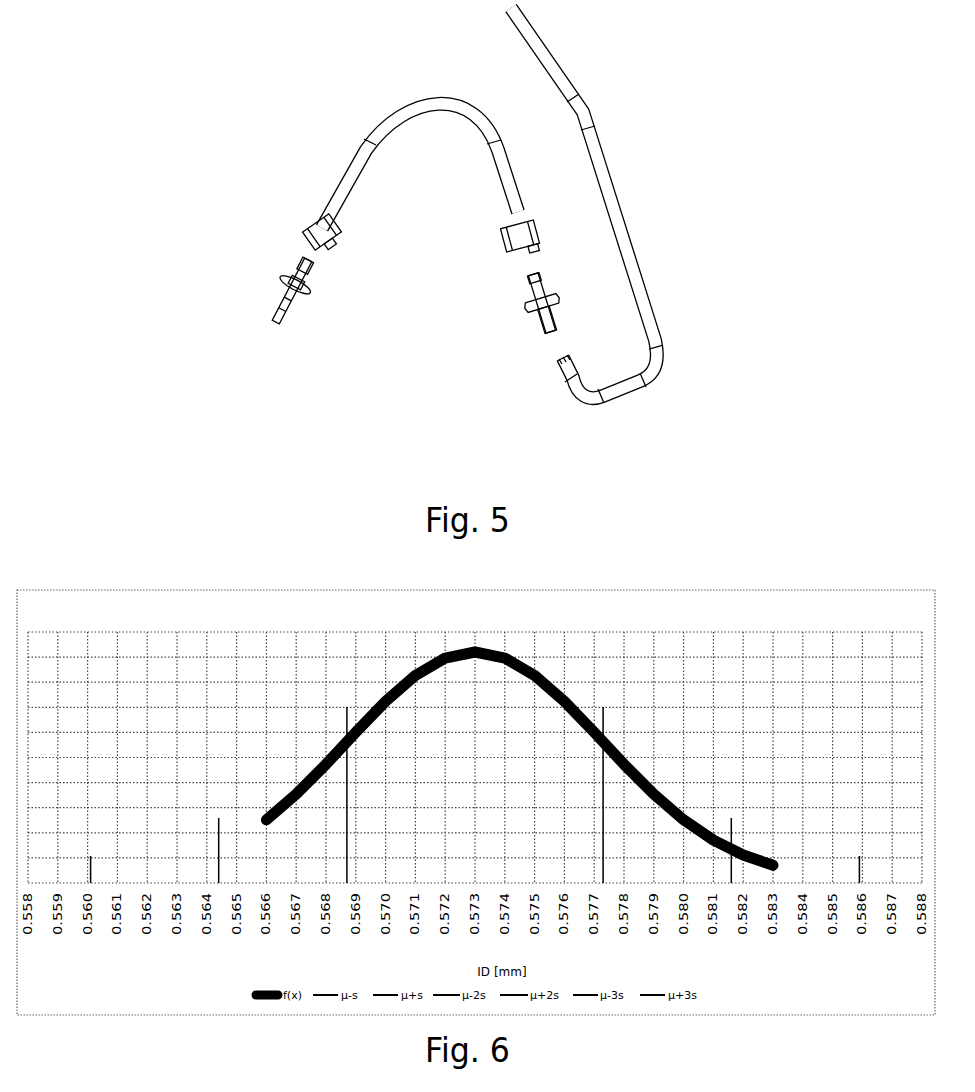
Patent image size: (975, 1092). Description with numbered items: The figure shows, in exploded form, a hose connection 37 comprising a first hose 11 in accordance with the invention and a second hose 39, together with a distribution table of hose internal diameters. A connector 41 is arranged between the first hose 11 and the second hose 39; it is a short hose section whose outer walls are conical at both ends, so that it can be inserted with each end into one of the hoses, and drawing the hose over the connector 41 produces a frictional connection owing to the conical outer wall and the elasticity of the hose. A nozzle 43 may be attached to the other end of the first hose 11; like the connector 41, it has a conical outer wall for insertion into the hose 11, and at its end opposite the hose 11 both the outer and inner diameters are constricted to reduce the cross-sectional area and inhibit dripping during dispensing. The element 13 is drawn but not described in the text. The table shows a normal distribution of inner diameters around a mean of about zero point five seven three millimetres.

The first hose 11 is at (357, 168).
The clamp 13 is at (331, 234).
The hose connection 37 is at (294, 98).
The second hose 39 is at (605, 200).
The connector 41 is at (537, 316).
The nozzle 43 is at (284, 297).